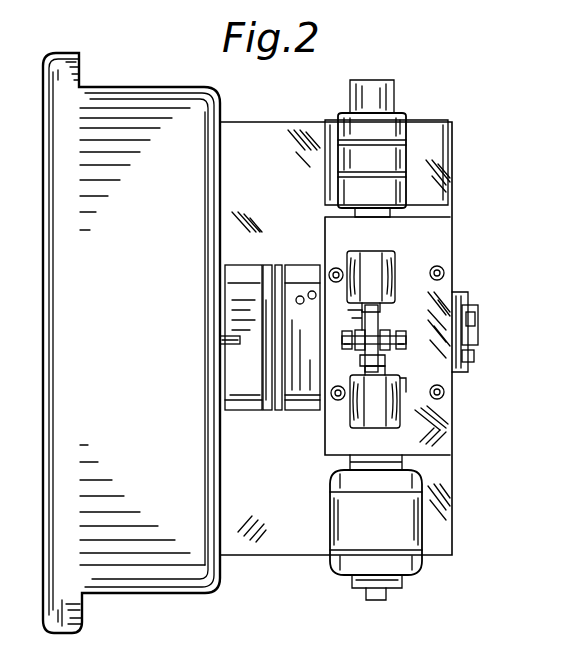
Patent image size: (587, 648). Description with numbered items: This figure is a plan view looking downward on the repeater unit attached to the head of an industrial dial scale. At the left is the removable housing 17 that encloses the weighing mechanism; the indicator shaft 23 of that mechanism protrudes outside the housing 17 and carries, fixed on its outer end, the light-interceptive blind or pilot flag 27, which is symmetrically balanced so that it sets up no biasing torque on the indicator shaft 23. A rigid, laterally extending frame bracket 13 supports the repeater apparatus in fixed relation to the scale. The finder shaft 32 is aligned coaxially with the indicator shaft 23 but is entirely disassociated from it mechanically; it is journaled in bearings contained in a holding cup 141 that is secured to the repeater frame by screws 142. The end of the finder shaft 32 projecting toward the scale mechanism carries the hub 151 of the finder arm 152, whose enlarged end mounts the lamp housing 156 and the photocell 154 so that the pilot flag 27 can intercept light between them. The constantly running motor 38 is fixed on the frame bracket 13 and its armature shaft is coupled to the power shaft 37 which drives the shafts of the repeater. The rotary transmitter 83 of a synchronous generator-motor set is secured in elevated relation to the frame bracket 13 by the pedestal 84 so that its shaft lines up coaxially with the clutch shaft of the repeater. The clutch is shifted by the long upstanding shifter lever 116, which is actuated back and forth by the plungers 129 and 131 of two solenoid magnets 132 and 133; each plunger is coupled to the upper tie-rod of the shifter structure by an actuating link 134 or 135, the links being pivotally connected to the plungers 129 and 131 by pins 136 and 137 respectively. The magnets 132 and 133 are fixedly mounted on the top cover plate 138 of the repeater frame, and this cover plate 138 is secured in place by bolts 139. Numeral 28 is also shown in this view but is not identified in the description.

The frame bracket 13 is at (336, 338).
The housing 17 is at (131, 343).
The indicator shaft 23 is at (222, 356).
The pilot flag 27 is at (252, 292).
The lower block 28 is at (246, 410).
The finder shaft 32 is at (472, 322).
The power shaft 37 is at (375, 458).
The motor 38 is at (376, 535).
The rotary transmitter 83 is at (372, 148).
The pedestal 84 is at (412, 130).
The shifter lever 116 is at (402, 342).
The plunger 129 is at (400, 384).
The plunger 131 is at (380, 318).
The solenoid magnet 132 is at (402, 410).
The solenoid magnet 133 is at (372, 258).
The actuating link 134 is at (383, 352).
The actuating link 135 is at (358, 323).
The pin 136 is at (386, 362).
The pin 137 is at (388, 326).
The top cover plate 138 is at (450, 440).
The bolts 139 is at (445, 268).
The holding cup 141 is at (458, 296).
The screws 142 is at (474, 356).
The hub 151 is at (282, 412).
The finder arm 152 is at (278, 268).
The photocell 154 is at (298, 276).
The housing 156 is at (265, 278).